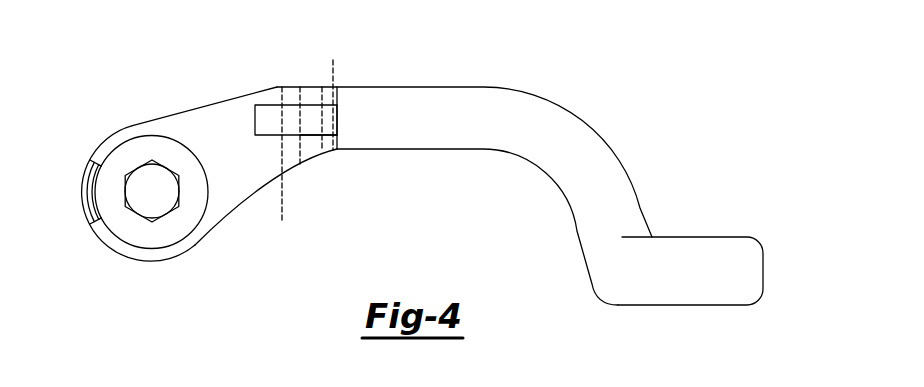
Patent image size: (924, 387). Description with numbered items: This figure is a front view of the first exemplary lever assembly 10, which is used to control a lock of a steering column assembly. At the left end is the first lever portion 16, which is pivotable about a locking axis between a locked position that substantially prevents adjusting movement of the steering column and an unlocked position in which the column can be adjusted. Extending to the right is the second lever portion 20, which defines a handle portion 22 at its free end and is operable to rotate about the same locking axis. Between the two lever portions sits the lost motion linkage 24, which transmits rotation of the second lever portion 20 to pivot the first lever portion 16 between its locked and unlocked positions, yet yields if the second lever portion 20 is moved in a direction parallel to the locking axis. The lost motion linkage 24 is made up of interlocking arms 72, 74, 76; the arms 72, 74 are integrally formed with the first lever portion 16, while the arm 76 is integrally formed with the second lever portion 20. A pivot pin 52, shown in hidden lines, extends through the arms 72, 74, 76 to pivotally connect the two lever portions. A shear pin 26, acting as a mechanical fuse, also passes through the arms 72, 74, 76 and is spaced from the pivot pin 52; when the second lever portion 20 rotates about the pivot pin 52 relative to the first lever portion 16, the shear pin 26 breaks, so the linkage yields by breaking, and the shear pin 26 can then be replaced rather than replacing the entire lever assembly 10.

The lever assembly 10 is at (104, 271).
The first lever portion 16 is at (160, 273).
The second lever portion 20 is at (395, 87).
The handle portion 22 is at (730, 268).
The lost motion linkage 24 is at (347, 172).
The shear pin 26 is at (333, 60).
The pivot pin 52 is at (287, 169).
The interlocking arm 72 is at (305, 96).
The interlocking arm 74 is at (312, 143).
The interlocking arm 76 is at (287, 123).